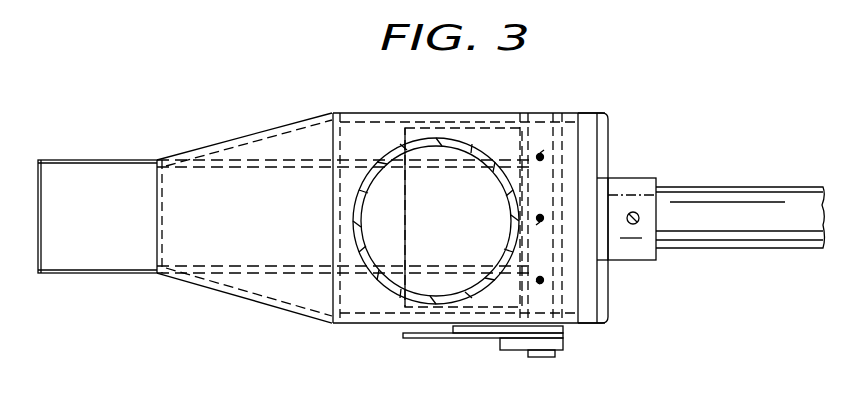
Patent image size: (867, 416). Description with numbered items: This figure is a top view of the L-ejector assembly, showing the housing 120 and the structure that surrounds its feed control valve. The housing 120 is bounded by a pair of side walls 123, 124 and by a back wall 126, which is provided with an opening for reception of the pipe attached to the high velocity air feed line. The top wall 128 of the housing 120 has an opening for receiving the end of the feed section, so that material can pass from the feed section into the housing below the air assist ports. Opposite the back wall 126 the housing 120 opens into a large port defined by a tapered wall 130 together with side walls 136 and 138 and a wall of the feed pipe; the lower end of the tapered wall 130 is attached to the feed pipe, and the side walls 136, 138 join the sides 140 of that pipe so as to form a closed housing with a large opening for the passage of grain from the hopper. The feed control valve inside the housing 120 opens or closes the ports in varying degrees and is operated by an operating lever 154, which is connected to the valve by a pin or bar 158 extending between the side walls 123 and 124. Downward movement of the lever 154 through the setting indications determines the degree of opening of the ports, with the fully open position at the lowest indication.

The housing 120 is at (565, 78).
The side wall 123 is at (450, 112).
The side wall 124 is at (374, 325).
The back wall 126 is at (610, 140).
The top wall 128 is at (371, 130).
The tapered wall 130 is at (300, 295).
The side wall 136 is at (251, 132).
The side wall 138 is at (240, 300).
The sides of the pipe 140 is at (300, 168).
The operating lever 154 is at (460, 340).
The pin or bar 158 is at (552, 355).